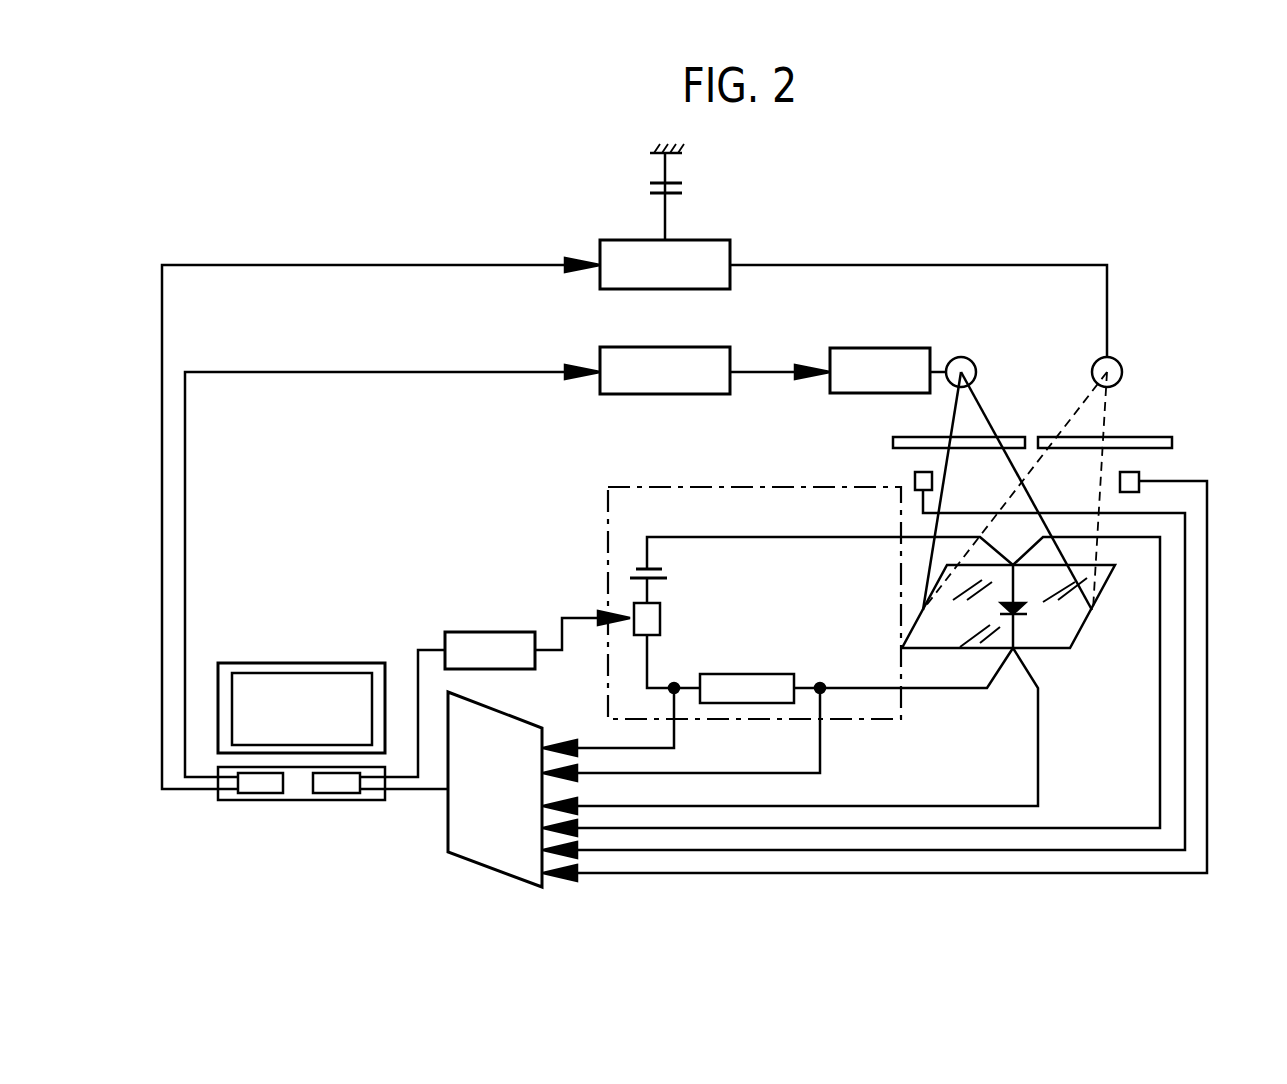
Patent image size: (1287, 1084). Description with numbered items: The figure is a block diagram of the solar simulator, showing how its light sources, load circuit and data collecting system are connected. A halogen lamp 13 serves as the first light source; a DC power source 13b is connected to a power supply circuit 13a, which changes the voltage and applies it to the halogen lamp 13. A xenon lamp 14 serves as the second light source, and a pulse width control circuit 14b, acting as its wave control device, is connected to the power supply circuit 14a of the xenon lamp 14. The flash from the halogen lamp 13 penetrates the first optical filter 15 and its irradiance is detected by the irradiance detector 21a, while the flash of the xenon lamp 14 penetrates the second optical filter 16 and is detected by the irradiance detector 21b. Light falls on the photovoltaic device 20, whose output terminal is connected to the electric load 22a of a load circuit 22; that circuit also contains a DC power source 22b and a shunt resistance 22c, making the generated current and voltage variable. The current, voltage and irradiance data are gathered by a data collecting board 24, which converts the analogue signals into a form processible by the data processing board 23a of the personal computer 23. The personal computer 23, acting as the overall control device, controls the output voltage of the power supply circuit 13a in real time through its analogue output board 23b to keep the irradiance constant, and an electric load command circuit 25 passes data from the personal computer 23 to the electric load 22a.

The halogen lamp 13 is at (1117, 357).
The power supply circuit 13a is at (693, 240).
The DC power source 13b is at (685, 187).
The xenon lamp 14 is at (968, 358).
The power supply circuit 14a is at (617, 394).
The pulse width control circuit 14b is at (882, 348).
The first optical filter 15 is at (1172, 442).
The second optical filter 16 is at (893, 441).
The photovoltaic device 20 is at (1078, 637).
The irradiance detector 21a is at (1133, 470).
The irradiance detector 21b is at (913, 478).
The load circuit 22 is at (713, 478).
The electric load 22a is at (660, 620).
The DC power source 22b is at (668, 575).
The shunt resistance 22c is at (775, 674).
The personal computer 23 is at (297, 667).
The data processing board 23a is at (337, 795).
The analogue output board 23b is at (252, 795).
The data collecting board 24 is at (460, 857).
The electric load command circuit 25 is at (487, 632).